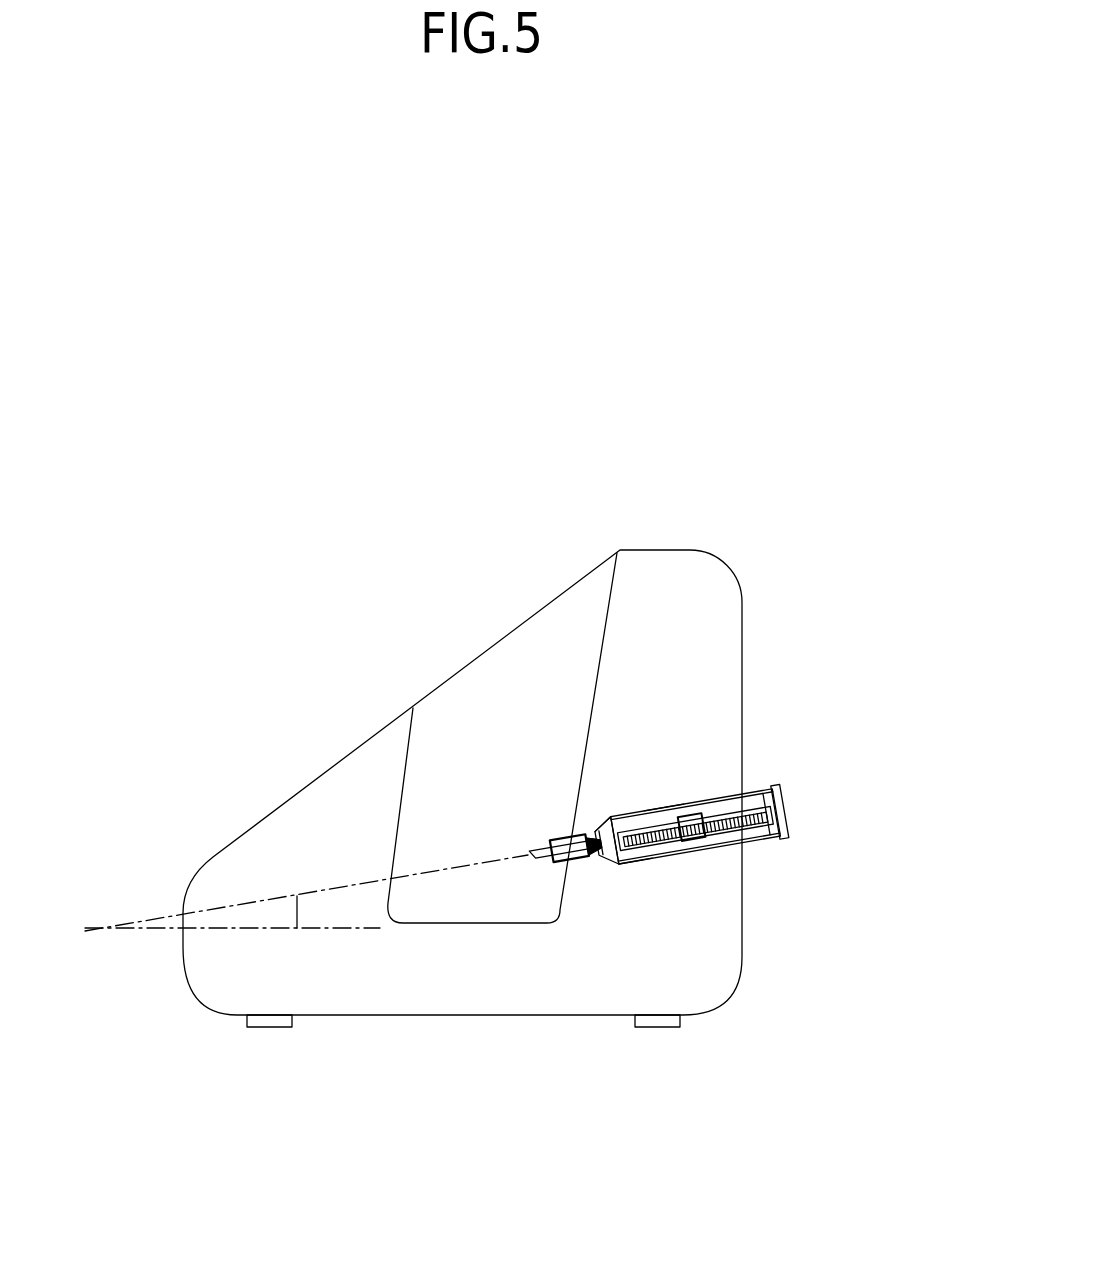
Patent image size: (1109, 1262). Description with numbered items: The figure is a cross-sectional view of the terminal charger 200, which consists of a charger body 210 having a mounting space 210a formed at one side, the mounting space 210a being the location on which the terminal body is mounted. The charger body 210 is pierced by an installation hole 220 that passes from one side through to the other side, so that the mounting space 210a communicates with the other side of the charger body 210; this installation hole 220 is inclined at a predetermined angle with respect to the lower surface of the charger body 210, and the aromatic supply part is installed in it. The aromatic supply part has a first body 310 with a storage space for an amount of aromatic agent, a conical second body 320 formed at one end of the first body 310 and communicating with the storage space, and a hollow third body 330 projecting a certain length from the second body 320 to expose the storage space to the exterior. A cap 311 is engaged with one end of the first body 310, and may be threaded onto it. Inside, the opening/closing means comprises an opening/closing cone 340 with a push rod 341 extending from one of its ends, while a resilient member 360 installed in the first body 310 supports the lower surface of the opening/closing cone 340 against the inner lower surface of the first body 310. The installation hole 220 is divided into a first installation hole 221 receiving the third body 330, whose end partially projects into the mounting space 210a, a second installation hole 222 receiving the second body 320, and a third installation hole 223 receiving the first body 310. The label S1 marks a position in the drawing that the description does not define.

The terminal charger 200 is at (283, 540).
The charger body 210 is at (268, 970).
The mounting space 210a is at (493, 698).
The installation hole 220 is at (912, 600).
The first installation hole 221 is at (589, 826).
The second installation hole 222 is at (601, 822).
The third installation hole 223 is at (665, 808).
The first body 310 is at (708, 849).
The cap 311 is at (782, 842).
The second body 320 is at (611, 865).
The third body 330 is at (586, 858).
The opening/closing cone 340 is at (598, 856).
The push rod 341 is at (545, 853).
The resilient member 360 is at (783, 810).
The injection surface S1 is at (636, 875).